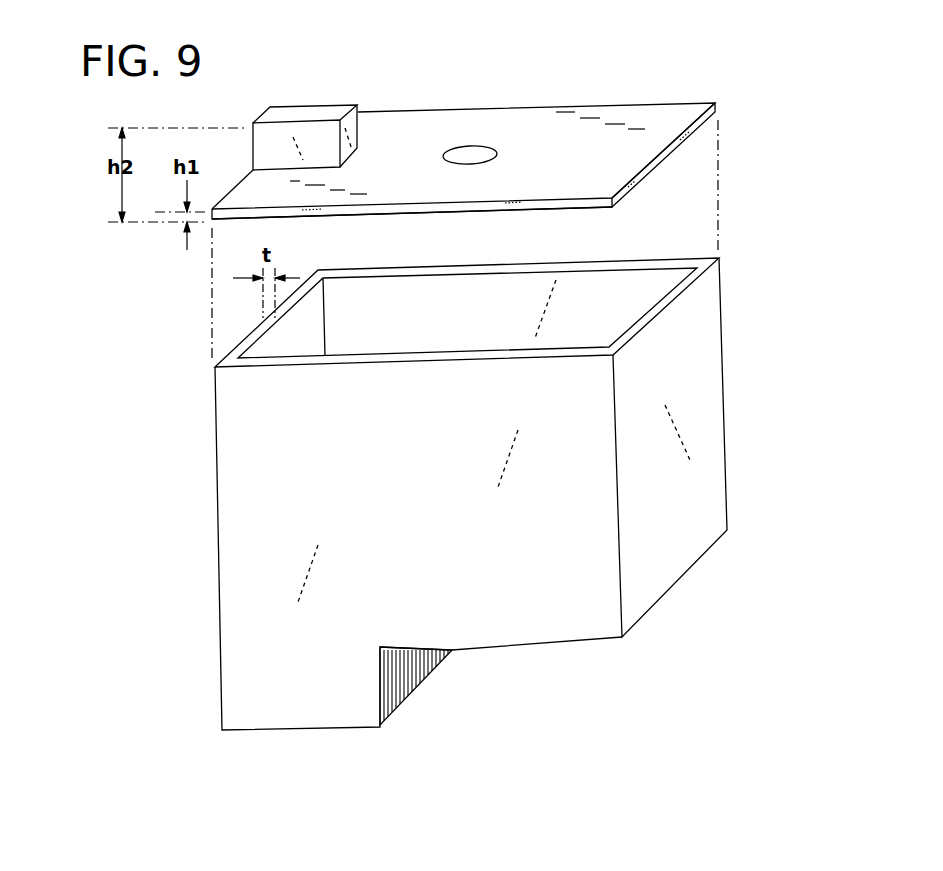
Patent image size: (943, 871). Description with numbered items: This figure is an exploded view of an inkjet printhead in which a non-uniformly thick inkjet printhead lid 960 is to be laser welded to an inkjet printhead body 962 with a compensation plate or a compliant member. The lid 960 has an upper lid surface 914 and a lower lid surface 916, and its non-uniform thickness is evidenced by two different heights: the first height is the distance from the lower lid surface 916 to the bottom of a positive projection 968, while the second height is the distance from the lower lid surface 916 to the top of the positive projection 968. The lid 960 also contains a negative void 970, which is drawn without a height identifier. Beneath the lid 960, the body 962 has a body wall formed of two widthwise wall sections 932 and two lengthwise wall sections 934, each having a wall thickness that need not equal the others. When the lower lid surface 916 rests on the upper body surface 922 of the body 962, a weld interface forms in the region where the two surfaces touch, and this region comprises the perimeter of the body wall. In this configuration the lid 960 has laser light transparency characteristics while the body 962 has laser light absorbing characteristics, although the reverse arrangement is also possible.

The upper lid surface 914 is at (560, 172).
The lower lid surface 916 is at (592, 216).
The upper body surface 922 is at (397, 269).
The widthwise wall sections 932 is at (248, 338).
The lengthwise wall sections 934 is at (504, 257).
The inkjet printhead lid 960 is at (672, 149).
The inkjet printhead body 962 is at (727, 423).
The positive projection 968 is at (307, 112).
The negative void 970 is at (472, 152).